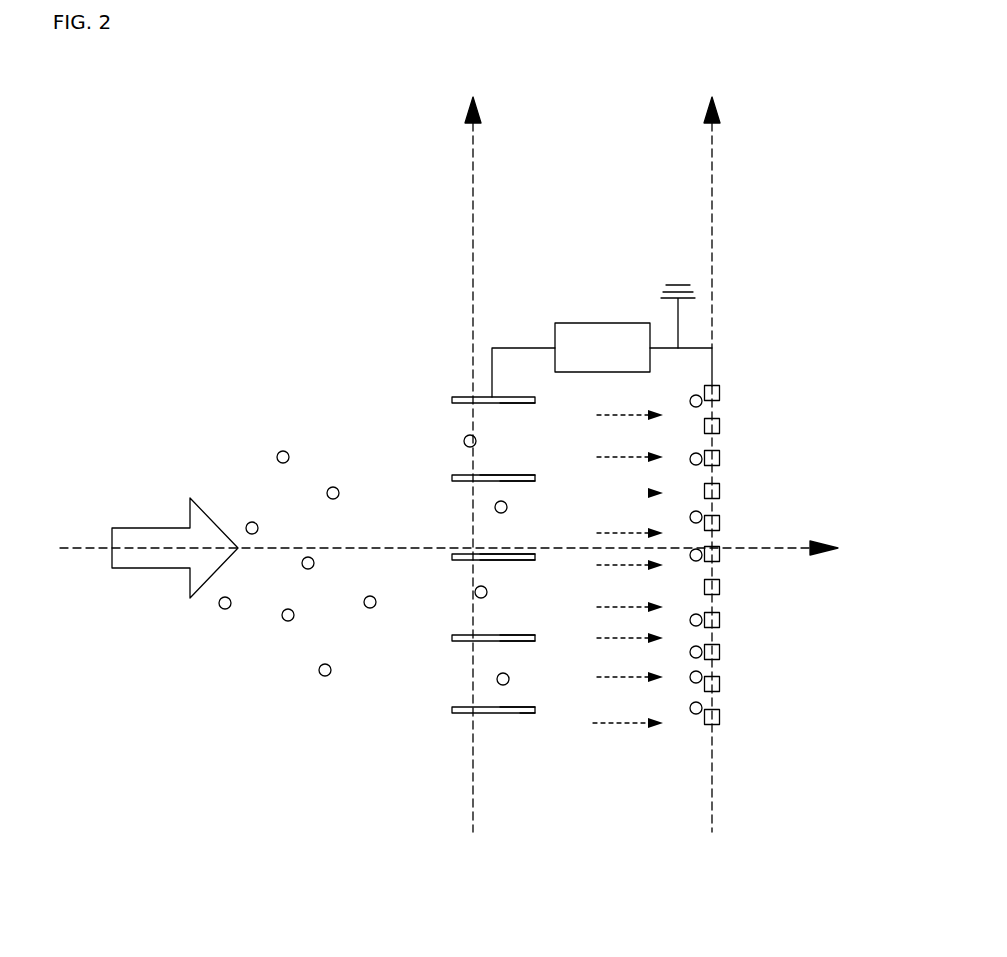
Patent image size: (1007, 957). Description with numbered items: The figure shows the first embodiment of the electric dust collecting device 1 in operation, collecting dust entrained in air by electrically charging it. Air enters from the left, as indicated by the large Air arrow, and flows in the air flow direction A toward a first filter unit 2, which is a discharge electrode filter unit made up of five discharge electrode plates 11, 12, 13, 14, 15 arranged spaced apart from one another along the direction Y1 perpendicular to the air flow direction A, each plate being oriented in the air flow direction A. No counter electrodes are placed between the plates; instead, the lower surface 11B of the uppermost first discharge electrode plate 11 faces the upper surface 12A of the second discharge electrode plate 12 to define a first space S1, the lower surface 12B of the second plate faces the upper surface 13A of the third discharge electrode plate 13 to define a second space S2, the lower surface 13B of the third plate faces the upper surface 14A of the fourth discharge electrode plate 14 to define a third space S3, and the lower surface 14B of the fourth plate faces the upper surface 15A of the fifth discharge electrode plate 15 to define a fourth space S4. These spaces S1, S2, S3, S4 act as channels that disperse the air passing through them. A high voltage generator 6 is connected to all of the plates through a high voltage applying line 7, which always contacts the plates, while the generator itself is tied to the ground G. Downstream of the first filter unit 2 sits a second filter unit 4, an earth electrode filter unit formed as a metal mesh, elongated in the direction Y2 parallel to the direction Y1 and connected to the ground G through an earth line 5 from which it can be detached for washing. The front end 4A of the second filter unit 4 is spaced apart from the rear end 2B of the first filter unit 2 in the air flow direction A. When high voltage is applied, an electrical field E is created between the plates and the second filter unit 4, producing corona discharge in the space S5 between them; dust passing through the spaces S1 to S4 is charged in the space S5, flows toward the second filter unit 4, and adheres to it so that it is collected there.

The electric dust collecting device 1 is at (310, 282).
The first filter unit 2 is at (490, 628).
The rear end of the first filter unit 2B is at (539, 713).
The second filter unit 4 is at (670, 636).
The front end of the second filter unit 4A is at (690, 713).
The earth line 5 is at (715, 358).
The high voltage generator 6 is at (575, 323).
The high voltage applying line 7 is at (495, 348).
The first discharge electrode plate 11 is at (456, 397).
The lower surface of the first discharge electrode plate 11B is at (523, 403).
The second discharge electrode plate 12 is at (458, 477).
The upper surface of the second discharge electrode plate 12A is at (488, 475).
The lower surface of the second discharge electrode plate 12B is at (523, 481).
The third discharge electrode plate 13 is at (457, 556).
The upper surface of the third discharge electrode plate 13A is at (488, 554).
The lower surface of the third discharge electrode plate 13B is at (490, 561).
The fourth discharge electrode plate 14 is at (458, 640).
The upper surface of the fourth discharge electrode plate 14A is at (525, 636).
The lower surface of the fourth discharge electrode plate 14B is at (525, 641).
The fifth discharge electrode plate 15 is at (493, 713).
The upper surface of the fifth discharge electrode plate 15A is at (525, 708).
The first space S1 is at (465, 416).
The second space S2 is at (462, 523).
The third space S3 is at (455, 608).
The fourth space S4 is at (462, 694).
The space between the discharge electrode plates and the second filter unit S5 is at (610, 583).
The air flow direction A is at (760, 548).
The electrical field E is at (622, 725).
The ground G is at (672, 283).
The direction perpendicular to the air flow direction Y1 is at (475, 449).
The elongation direction of the second filter unit Y2 is at (710, 449).
The air flow Air is at (153, 558).